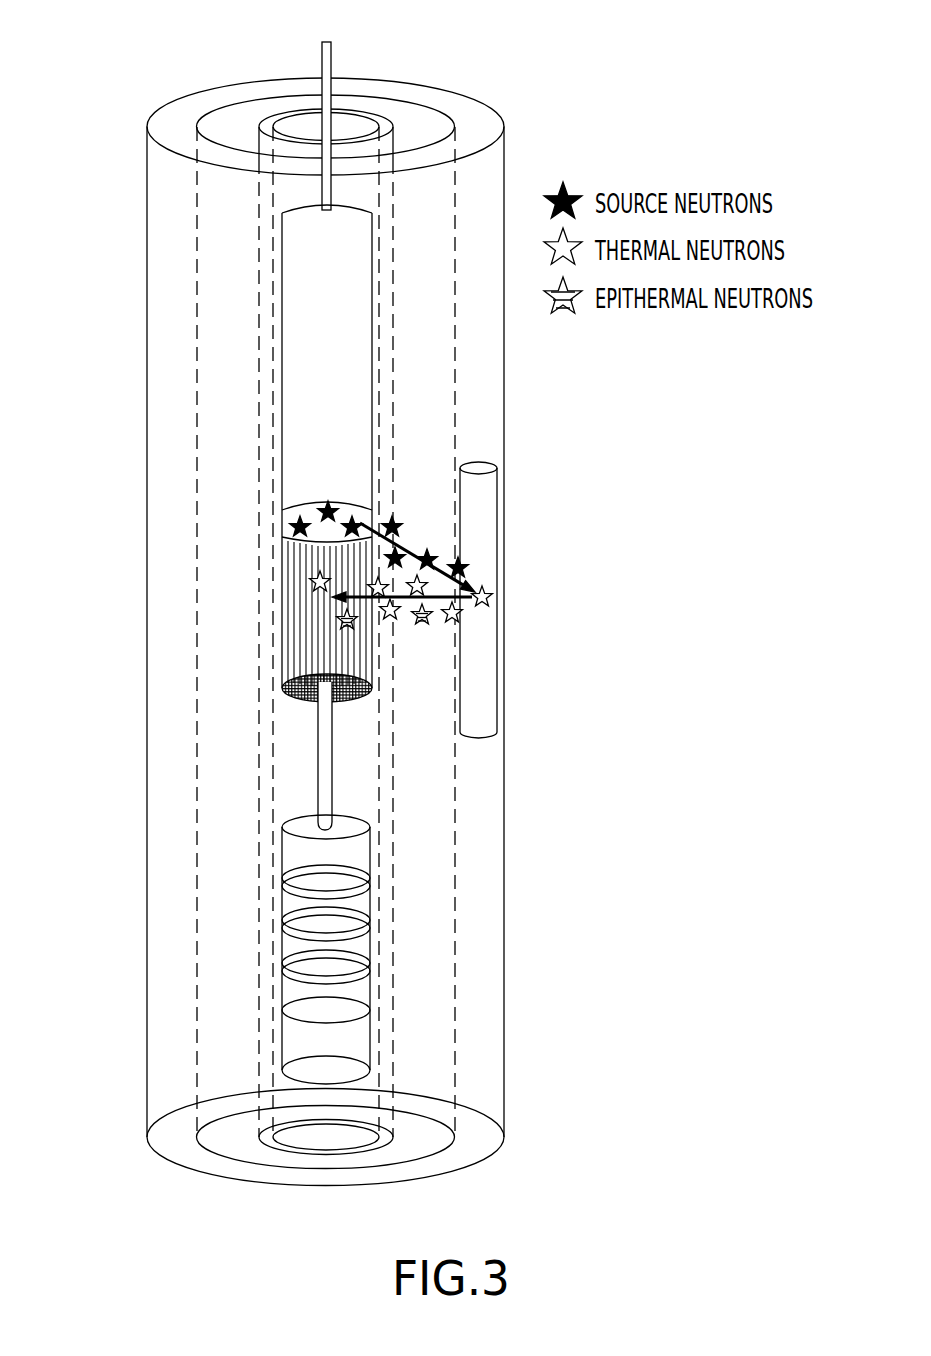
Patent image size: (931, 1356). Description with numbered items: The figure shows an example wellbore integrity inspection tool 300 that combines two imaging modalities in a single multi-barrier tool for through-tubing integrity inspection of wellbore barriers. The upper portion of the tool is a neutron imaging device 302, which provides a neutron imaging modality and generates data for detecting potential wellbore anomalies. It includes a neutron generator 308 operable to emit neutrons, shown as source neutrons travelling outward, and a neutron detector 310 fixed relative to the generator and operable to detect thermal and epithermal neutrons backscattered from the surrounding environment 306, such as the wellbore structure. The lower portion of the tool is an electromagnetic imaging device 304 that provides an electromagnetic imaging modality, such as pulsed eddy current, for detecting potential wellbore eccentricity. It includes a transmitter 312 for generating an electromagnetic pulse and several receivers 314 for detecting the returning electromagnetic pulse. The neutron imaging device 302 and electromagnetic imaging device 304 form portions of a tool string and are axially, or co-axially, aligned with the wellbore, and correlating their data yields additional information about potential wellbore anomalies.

The wellbore integrity inspection tool 300 is at (546, 72).
The neutron imaging device 302 is at (122, 204).
The electromagnetic imaging device 304 is at (122, 793).
The surrounding environment 306 is at (488, 537).
The neutron generator 308 is at (410, 537).
The neutron detector 310 is at (407, 622).
The transmitter 312 is at (362, 1037).
The receiver 314 is at (362, 890).